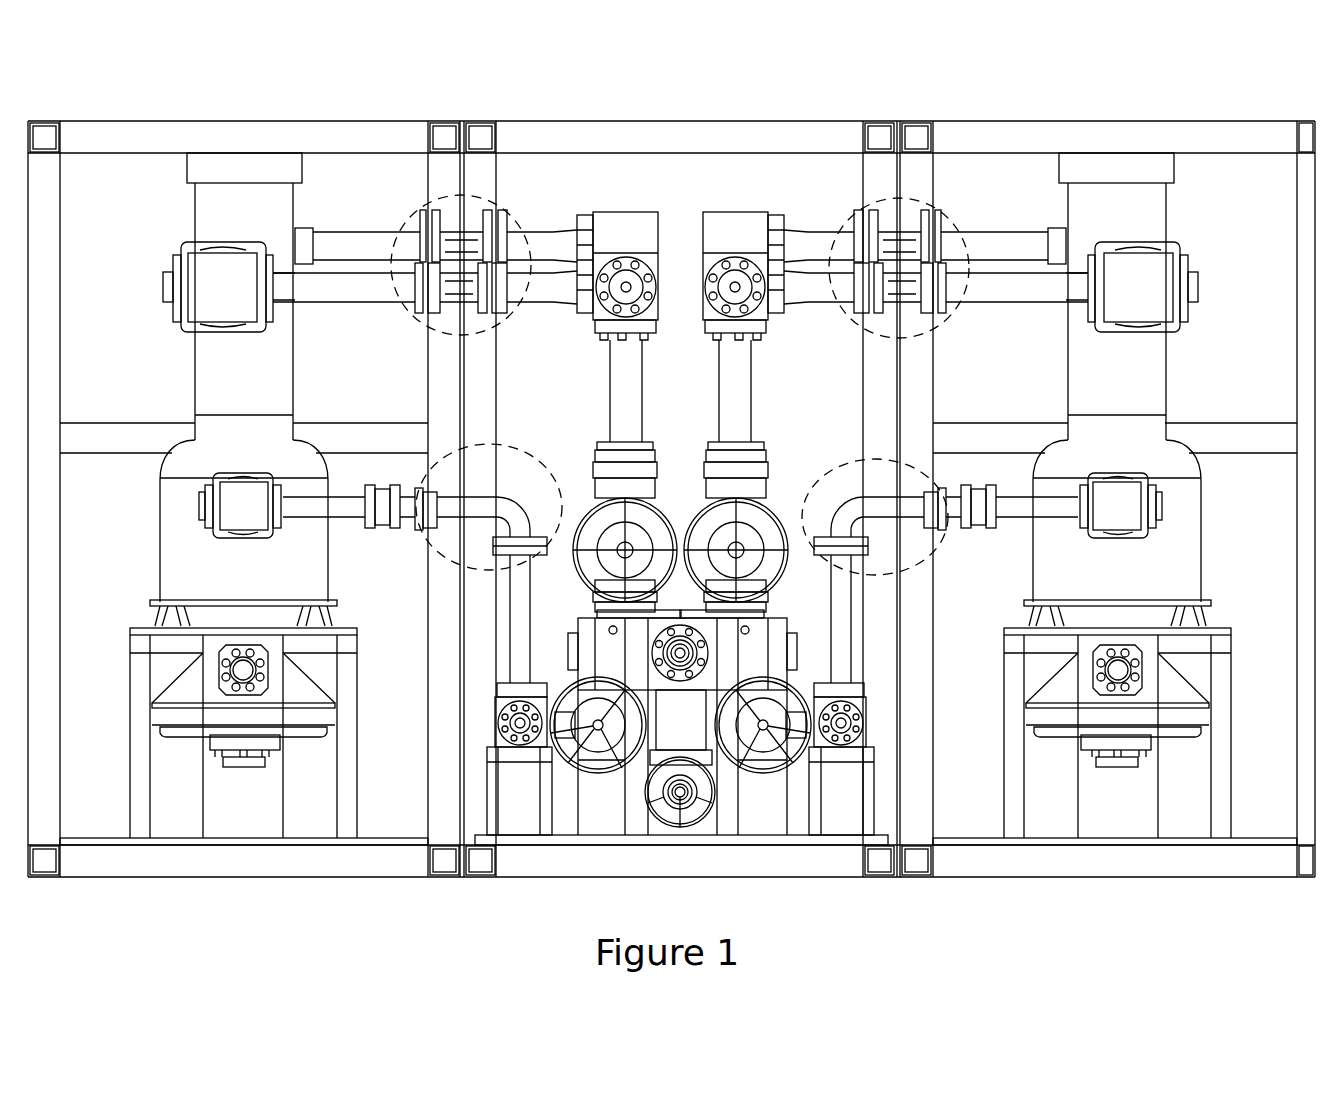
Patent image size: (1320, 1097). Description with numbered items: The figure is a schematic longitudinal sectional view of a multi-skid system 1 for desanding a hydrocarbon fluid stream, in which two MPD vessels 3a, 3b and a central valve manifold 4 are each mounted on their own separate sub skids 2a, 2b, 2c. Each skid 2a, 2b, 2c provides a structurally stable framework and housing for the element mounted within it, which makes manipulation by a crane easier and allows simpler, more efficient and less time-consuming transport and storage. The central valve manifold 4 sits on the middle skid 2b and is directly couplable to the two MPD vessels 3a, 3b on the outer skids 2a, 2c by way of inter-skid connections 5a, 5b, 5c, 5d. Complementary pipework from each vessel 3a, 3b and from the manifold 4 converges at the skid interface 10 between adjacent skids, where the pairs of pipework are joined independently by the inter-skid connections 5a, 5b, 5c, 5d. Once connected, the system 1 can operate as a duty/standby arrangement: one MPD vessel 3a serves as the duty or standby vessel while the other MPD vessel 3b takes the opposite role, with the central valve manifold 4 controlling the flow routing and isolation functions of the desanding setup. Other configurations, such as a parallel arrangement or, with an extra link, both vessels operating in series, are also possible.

The multi-skid system 1 is at (56, 99).
The skid 2a is at (218, 121).
The skid 2b is at (663, 121).
The skid 2c is at (1077, 121).
The MPD vessel 3a is at (262, 215).
The MPD vessel 3b is at (1150, 217).
The central valve manifold 4 is at (668, 733).
The inter-skid connection 5a is at (408, 214).
The inter-skid connection 5b is at (937, 214).
The inter-skid connection 5c is at (458, 563).
The inter-skid connection 5d is at (910, 557).
The skid interface 10 is at (460, 363).